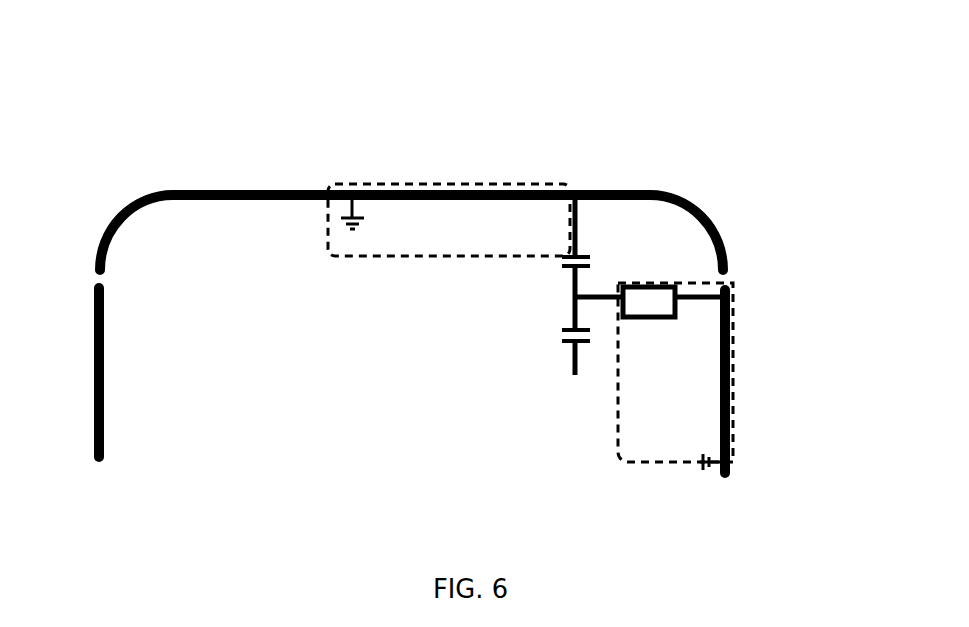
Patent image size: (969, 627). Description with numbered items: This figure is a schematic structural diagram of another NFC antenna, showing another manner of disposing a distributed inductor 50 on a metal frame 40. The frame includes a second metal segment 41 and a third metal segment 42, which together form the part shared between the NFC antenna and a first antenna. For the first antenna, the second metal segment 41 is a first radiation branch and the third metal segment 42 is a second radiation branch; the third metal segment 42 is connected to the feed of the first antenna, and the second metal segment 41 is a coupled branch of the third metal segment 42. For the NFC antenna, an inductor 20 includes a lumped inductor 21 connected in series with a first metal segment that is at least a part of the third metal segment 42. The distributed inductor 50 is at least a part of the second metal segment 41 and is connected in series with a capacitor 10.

The metal frame 40 is at (122, 166).
The distributed inductor 50 is at (428, 183).
The second metal segment 41 is at (585, 191).
The capacitor 10 is at (560, 272).
The lumped inductor 21 is at (655, 295).
The inductor 20 is at (730, 363).
The third metal segment 42 is at (728, 457).